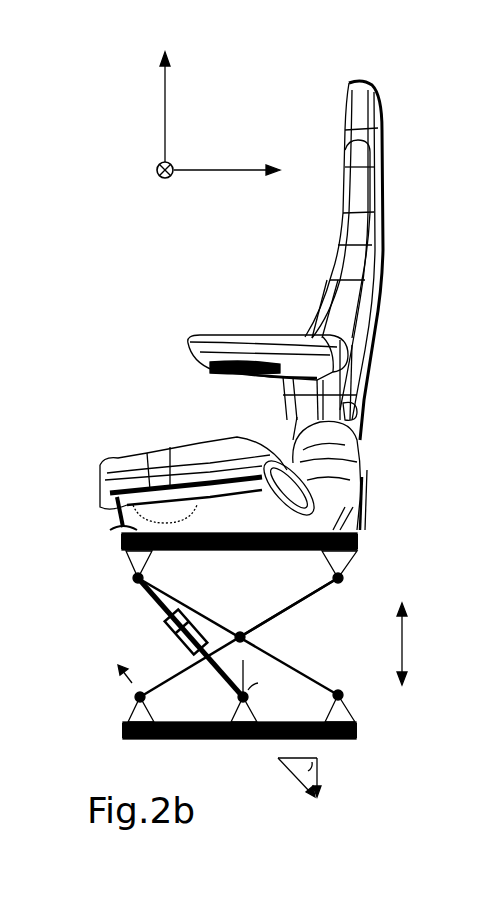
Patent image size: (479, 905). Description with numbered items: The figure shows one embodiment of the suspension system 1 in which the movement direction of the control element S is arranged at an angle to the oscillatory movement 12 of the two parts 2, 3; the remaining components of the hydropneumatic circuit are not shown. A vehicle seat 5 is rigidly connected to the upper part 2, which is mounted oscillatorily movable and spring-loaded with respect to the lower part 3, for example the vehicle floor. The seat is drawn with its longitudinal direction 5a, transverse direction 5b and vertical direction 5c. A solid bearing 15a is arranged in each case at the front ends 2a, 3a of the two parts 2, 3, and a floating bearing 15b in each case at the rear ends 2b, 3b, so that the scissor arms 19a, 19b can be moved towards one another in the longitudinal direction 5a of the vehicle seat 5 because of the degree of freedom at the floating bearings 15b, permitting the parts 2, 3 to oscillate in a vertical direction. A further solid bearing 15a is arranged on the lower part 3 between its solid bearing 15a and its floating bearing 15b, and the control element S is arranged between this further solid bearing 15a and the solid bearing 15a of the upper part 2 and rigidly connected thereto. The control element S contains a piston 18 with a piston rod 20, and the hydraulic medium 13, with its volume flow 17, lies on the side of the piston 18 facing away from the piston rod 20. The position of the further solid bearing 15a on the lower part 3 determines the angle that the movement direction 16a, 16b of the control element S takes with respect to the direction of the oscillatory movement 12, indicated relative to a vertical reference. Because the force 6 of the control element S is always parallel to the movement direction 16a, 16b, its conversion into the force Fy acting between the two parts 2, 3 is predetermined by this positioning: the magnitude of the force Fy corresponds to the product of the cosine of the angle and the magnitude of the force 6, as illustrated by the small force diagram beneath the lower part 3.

The suspension system 1 is at (110, 597).
The part 2 is at (358, 540).
The end 2a is at (122, 540).
The end 2b is at (357, 548).
The part 3 is at (356, 735).
The end 3a is at (122, 730).
The end 3b is at (356, 724).
The vehicle seat 5 is at (258, 240).
The longitudinal direction 5a is at (228, 168).
The transverse direction 5b is at (153, 173).
The vertical direction 5c is at (165, 95).
The force 6 is at (296, 781).
The oscillatory movement 12 is at (402, 640).
The hydraulic medium 13 is at (200, 660).
The solid bearing 15a is at (146, 563).
The floating bearing 15b is at (326, 563).
The movement direction 16a is at (145, 675).
The movement direction 16b is at (126, 680).
The volume flow 17 is at (237, 664).
The piston 18 is at (197, 616).
The scissor arm 19a is at (286, 608).
The scissor arm 19b is at (289, 664).
The piston rod 20 is at (172, 620).
The control element S is at (178, 664).
The force Fy is at (320, 763).